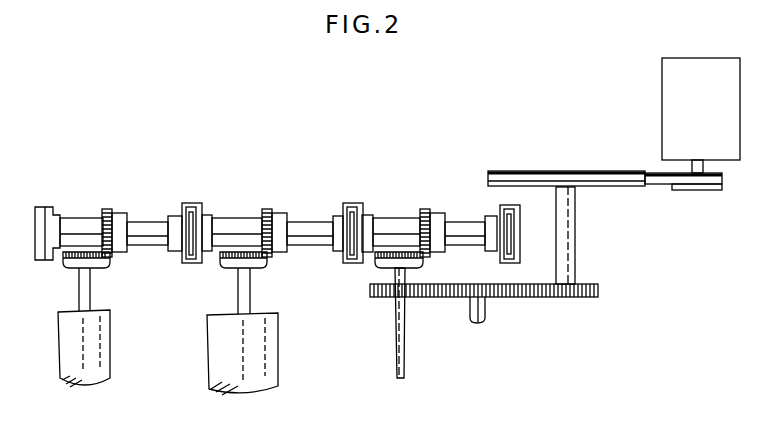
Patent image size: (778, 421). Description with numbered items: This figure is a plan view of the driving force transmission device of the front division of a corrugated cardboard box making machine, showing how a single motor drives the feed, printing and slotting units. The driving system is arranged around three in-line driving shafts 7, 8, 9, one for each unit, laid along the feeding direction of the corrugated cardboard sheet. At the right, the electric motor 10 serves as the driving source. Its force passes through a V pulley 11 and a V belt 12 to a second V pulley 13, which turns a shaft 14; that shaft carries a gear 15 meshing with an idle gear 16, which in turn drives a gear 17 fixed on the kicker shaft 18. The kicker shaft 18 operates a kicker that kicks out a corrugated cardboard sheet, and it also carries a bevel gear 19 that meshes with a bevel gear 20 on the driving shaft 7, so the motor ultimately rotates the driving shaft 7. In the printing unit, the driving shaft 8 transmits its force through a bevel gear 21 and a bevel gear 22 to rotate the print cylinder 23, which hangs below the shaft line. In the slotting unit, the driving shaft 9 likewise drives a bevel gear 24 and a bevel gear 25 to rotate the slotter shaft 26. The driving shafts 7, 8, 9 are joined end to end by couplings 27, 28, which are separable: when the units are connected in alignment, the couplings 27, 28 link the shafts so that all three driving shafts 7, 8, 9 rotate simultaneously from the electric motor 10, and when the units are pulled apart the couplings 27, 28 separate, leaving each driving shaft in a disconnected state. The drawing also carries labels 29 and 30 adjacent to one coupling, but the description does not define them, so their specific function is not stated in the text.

The driving shaft 7 is at (397, 218).
The driving shaft 8 is at (230, 218).
The driving shaft 9 is at (76, 218).
The electric motor 10 is at (667, 90).
The V pulley 11 is at (686, 190).
The V belt 12 is at (657, 186).
The V pulley 13 is at (537, 171).
The shaft 14 is at (577, 205).
The gear 15 is at (580, 298).
The idle gear 16 is at (502, 298).
The gear 17 is at (415, 298).
The kicker shaft 18 is at (395, 328).
The bevel gear 19 is at (375, 260).
The bevel gear 20 is at (425, 209).
The bevel gear 21 is at (263, 209).
The bevel gear 22 is at (222, 255).
The print cylinder 23 is at (275, 343).
The bevel gear 24 is at (106, 209).
The bevel gear 25 is at (63, 255).
The slotter shaft 26 is at (110, 328).
The coupling 27 is at (358, 200).
The coupling 28 is at (190, 200).
The collar 29 is at (368, 215).
The bracket 30 is at (340, 216).